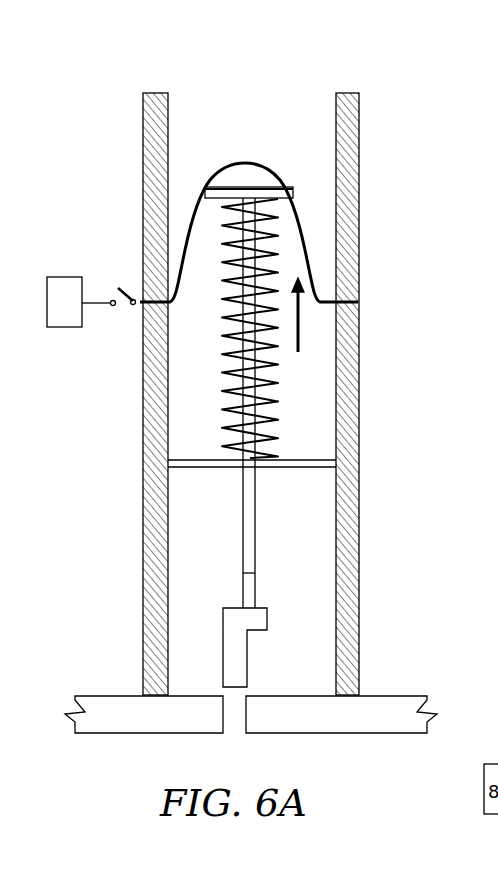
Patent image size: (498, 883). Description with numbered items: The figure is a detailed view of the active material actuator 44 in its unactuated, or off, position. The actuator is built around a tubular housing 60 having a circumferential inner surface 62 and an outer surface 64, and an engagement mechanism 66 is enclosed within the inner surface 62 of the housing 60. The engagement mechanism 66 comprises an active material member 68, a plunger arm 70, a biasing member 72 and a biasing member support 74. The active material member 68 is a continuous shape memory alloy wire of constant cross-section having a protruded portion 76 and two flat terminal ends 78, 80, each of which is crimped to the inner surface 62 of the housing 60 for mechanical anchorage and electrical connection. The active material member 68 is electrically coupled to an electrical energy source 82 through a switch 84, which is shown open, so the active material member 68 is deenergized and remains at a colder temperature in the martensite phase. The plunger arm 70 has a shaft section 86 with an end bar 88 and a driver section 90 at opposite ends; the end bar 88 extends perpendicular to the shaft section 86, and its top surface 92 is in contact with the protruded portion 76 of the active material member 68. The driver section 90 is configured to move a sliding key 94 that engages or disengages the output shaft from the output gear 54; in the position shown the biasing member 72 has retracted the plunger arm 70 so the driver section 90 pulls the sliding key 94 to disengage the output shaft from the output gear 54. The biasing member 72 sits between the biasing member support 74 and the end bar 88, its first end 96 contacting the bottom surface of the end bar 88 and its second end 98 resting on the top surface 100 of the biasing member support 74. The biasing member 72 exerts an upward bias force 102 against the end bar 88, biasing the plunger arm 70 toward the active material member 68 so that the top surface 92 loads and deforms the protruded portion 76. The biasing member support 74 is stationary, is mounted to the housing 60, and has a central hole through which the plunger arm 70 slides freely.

The active material actuator 44 is at (200, 76).
The output gear 54 is at (105, 695).
The tubular housing 60 is at (143, 105).
The inner surface 62 is at (150, 161).
The outer surface 64 is at (143, 133).
The engagement mechanism 66 is at (185, 195).
The active material member 68 is at (278, 172).
The plunger arm 70 is at (256, 477).
The biasing member 72 is at (226, 405).
The biasing member support 74 is at (302, 463).
The protruded portion 76 is at (247, 163).
The flat terminal end 78 is at (141, 305).
The flat terminal end 80 is at (345, 308).
The electrical energy source 82 is at (81, 302).
The switch 84 is at (130, 297).
The shaft section 86 is at (275, 455).
The end bar 88 is at (293, 192).
The driver section 90 is at (252, 593).
The top surface 92 is at (272, 168).
The sliding key 94 is at (250, 643).
The first end 96 is at (280, 210).
The second end 98 is at (224, 452).
The top surface 100 is at (185, 458).
The upward bias force 102 is at (300, 320).